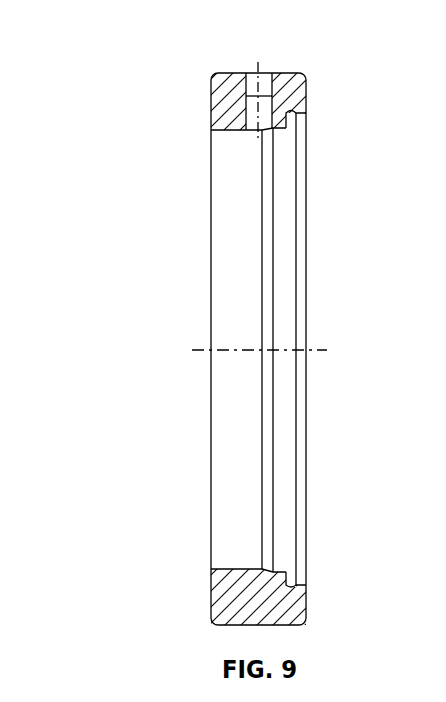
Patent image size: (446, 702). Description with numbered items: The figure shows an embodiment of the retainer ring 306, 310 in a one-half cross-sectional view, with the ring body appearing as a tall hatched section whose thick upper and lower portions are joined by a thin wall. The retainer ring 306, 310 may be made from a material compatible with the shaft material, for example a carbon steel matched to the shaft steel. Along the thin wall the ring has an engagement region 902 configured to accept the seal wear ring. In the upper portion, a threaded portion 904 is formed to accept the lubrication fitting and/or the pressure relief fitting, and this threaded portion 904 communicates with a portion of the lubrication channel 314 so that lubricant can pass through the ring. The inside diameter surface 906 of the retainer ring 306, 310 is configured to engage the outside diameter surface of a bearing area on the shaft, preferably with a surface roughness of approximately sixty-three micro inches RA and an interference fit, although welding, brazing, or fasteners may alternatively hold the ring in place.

The retainer ring 306 is at (175, 323).
The retainer ring 310 is at (165, 47).
The threaded portion 904 is at (252, 82).
The lubrication channel 314 is at (253, 118).
The engagement region 902 is at (300, 212).
The inside diameter surface 906 is at (227, 305).